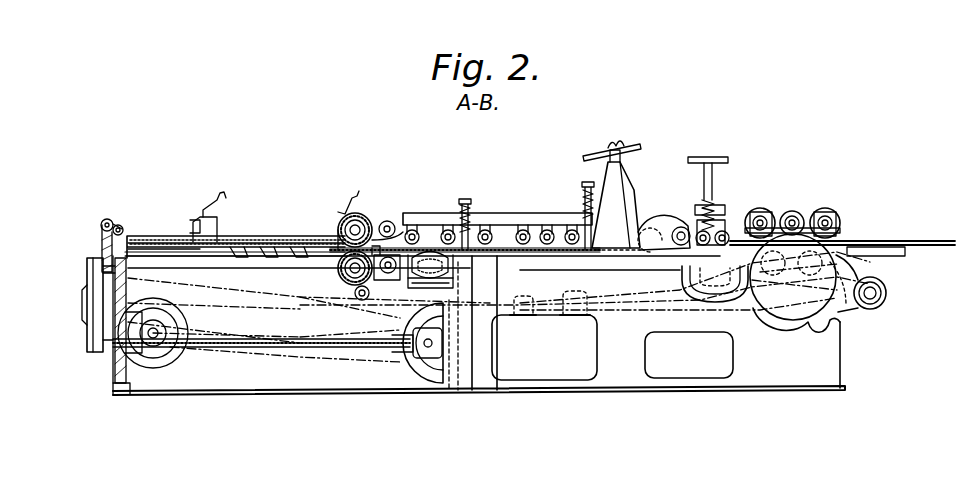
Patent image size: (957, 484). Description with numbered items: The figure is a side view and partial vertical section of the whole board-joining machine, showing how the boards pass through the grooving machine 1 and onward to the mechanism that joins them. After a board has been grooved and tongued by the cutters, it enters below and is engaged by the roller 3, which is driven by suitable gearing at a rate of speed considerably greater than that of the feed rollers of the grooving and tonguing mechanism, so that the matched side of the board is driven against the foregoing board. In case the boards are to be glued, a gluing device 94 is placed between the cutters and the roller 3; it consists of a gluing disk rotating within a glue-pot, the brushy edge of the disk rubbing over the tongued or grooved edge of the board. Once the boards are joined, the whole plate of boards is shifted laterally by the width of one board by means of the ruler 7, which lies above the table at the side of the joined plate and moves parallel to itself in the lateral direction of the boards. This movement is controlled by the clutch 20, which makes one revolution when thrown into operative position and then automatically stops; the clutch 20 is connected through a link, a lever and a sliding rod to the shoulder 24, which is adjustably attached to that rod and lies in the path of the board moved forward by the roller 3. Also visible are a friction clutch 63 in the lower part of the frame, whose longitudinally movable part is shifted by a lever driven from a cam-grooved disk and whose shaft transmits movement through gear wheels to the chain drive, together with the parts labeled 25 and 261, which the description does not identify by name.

The grooving machine 1 is at (658, 252).
The roller 3 is at (362, 216).
The ruler 7 is at (242, 240).
The clutch 20 is at (90, 258).
The shoulder 24 is at (196, 226).
The guide rail 25 is at (140, 244).
The pivoted arm 261 is at (120, 235).
The friction clutch 63 is at (178, 356).
The gluing device 94 is at (412, 280).